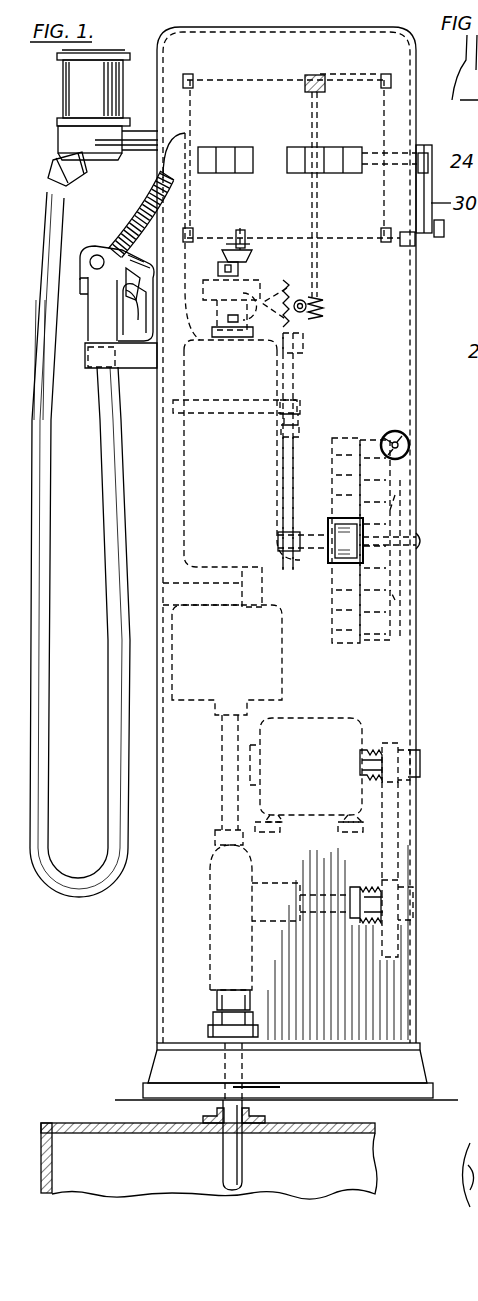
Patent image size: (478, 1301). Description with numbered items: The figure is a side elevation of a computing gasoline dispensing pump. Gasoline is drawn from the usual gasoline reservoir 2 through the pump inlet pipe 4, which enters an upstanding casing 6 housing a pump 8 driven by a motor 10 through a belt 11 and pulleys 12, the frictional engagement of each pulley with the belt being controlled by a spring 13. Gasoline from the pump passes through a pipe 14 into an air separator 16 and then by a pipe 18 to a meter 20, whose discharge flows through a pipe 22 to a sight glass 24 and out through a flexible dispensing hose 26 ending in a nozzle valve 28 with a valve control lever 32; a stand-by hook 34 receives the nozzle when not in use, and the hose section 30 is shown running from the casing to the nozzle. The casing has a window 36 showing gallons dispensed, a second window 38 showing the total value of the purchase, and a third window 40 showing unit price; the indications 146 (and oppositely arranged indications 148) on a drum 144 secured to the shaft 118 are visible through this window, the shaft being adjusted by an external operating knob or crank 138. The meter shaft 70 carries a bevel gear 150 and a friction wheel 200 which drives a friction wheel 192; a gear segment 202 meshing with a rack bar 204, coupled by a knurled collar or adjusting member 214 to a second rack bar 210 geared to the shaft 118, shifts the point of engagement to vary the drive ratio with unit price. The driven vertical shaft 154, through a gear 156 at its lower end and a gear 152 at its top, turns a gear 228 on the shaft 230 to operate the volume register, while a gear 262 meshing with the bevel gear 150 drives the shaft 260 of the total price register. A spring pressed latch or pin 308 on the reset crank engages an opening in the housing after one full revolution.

The gasoline reservoir 2 is at (73, 1123).
The pump inlet pipe 4 is at (244, 1163).
The casing 6 is at (157, 978).
The pump 8 is at (210, 918).
The motor 10 is at (340, 722).
The belt 11 is at (396, 814).
The pulleys 12 is at (402, 748).
The spring 13 is at (372, 748).
The pipe 14 is at (232, 807).
The air separator 16 is at (282, 673).
The pipe 18 is at (163, 583).
The meter 20 is at (185, 480).
The pipe 22 is at (140, 352).
The sight glass 24 is at (80, 102).
The flexible dispensing hose 26 is at (58, 233).
The nozzle valve 28 is at (100, 286).
The flexible conduit 30 is at (132, 205).
The valve control lever 32 is at (120, 318).
The stand-by hook 34 is at (88, 420).
The window 36 is at (256, 147).
The second window 38 is at (362, 150).
The third window 40 is at (363, 528).
The meter shaft 70 is at (218, 270).
The shaft 118 is at (312, 552).
The operating knob or crank 138 is at (409, 440).
The drum 144 is at (360, 645).
The indications 146 is at (334, 615).
The indications 148 is at (368, 438).
The bevel gear 150 is at (250, 252).
The gear 152 is at (312, 74).
The vertical shaft 154 is at (320, 292).
The gear 156 is at (325, 312).
The friction wheel 192 is at (222, 380).
The friction wheel 200 is at (224, 300).
The gear segment 202 is at (280, 290).
The rack bar 204 is at (300, 350).
The rack bar 210 is at (283, 495).
The knurled collar or adjusting member 214 is at (305, 420).
The gear 228 is at (332, 76).
The shaft 230 is at (225, 80).
The shaft 260 is at (275, 240).
The gear 262 is at (243, 228).
The spring pressed latch or pin 308 is at (402, 247).